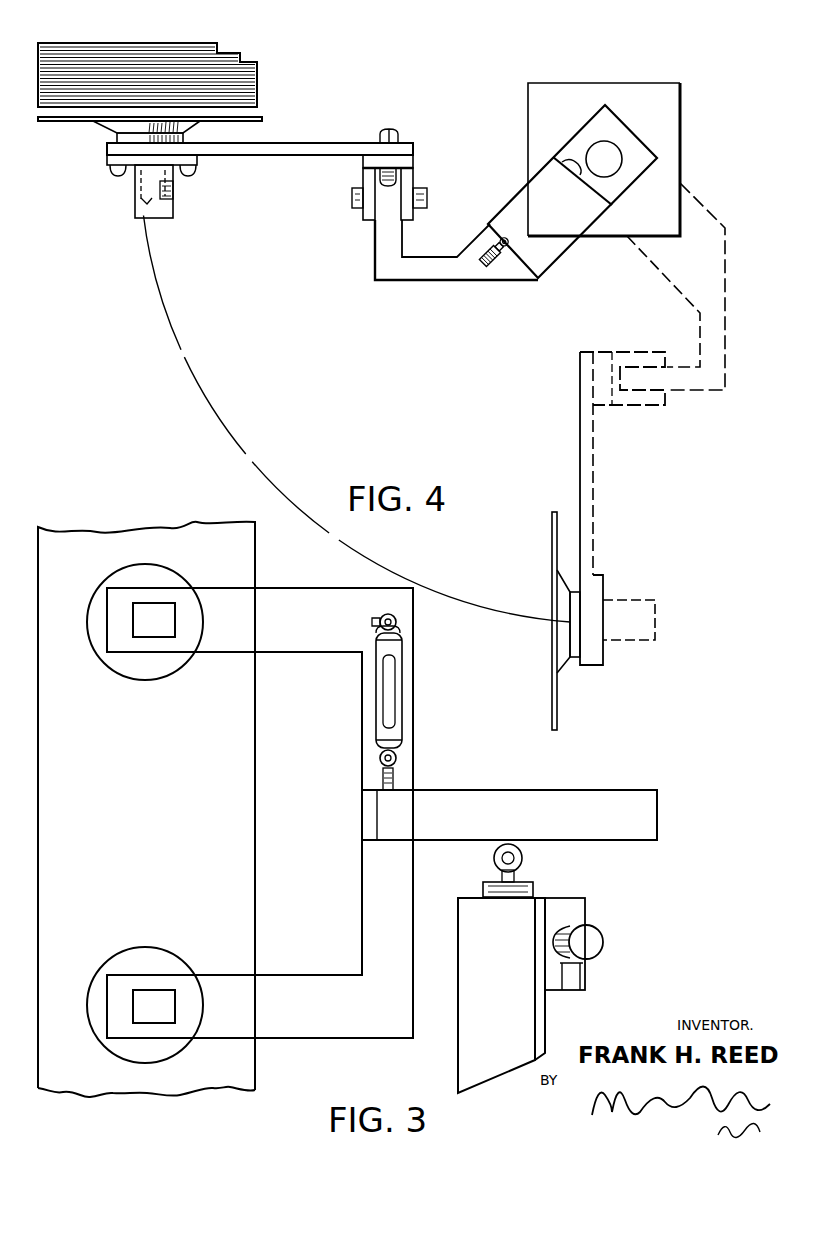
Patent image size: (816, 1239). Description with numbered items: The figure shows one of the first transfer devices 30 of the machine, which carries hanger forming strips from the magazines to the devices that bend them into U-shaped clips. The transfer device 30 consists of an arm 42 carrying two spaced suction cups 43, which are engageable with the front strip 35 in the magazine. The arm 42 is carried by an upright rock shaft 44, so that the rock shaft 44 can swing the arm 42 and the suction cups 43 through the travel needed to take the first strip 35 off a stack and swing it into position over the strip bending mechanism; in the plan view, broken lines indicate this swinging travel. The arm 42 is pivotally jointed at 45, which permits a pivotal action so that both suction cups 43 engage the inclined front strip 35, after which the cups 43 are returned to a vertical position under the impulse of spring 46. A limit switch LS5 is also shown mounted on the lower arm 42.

In FIG. 4, the housing 30 is at (637, 81).
In FIG. 4, the panel / plate 35 is at (262, 118).
In FIG. 3, the panel / plate 35 is at (257, 820).
In FIG. 4, the arm 42 is at (305, 155).
In FIG. 3, the arm 42 is at (309, 597).
In FIG. 4, the bracket / hub 43 is at (107, 128).
In FIG. 3, the bracket / hub 43 is at (130, 567).
In FIG. 4, the pivot 44 is at (620, 160).
In FIG. 4, the clamp bracket 45 is at (356, 225).
In FIG. 3, the turnbuckle 46 is at (405, 690).
In FIG. 3, the limit switch LS5 is at (549, 968).